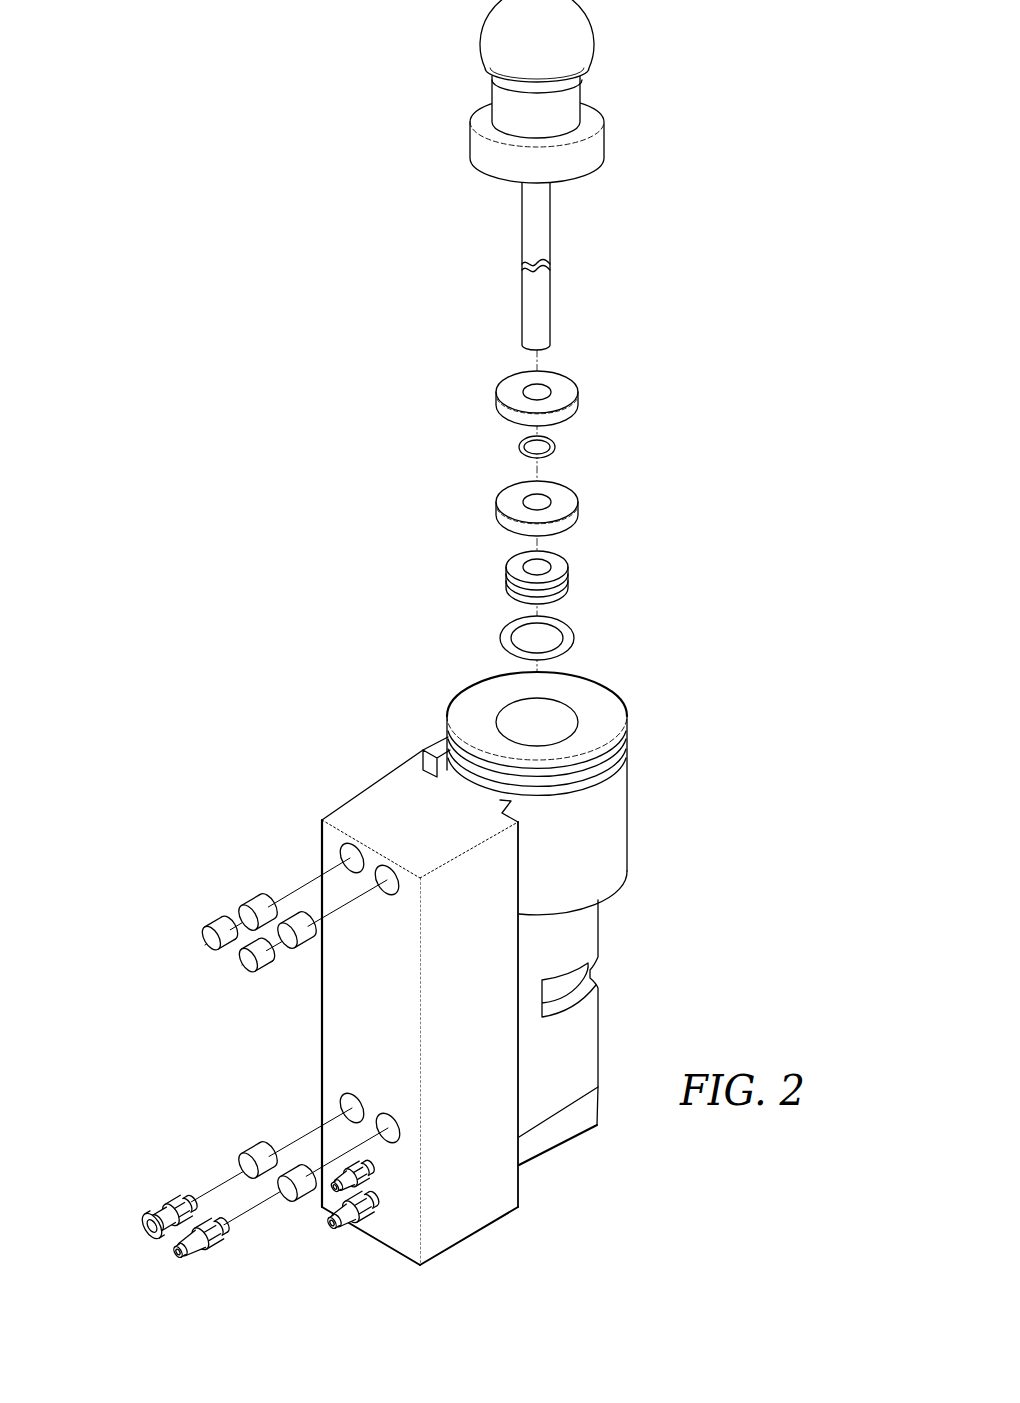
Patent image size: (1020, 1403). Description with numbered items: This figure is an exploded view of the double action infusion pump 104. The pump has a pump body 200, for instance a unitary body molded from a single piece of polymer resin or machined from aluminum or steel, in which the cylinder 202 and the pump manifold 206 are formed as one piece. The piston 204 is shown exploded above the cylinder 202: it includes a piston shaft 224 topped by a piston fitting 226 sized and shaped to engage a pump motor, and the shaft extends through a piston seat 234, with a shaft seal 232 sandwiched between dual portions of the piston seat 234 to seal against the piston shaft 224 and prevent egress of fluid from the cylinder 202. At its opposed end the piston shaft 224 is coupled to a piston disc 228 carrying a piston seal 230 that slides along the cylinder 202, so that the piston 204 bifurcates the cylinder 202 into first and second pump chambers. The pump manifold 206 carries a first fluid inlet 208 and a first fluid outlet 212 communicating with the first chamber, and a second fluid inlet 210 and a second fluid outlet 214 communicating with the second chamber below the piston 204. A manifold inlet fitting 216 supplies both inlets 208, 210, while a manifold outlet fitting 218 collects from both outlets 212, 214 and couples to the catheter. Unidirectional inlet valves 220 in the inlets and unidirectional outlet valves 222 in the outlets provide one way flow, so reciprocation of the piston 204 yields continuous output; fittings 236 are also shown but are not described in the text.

The double action infusion pump 104 is at (370, 807).
The pump body 200 is at (612, 810).
The cylinder 202 is at (515, 720).
The piston 204 is at (487, 378).
The pump manifold 206 is at (495, 1175).
The first fluid inlet 208 is at (385, 886).
The second fluid inlet 210 is at (386, 1132).
The first fluid outlet 212 is at (342, 852).
The second fluid outlet 214 is at (320, 1102).
The manifold inlet fitting 216 is at (180, 1252).
The manifold outlet fitting 218 is at (152, 1207).
The unidirectional inlet valve 220 is at (303, 946).
The unidirectional outlet valve 222 is at (265, 893).
The piston shaft 224 is at (537, 229).
The piston fitting 226 is at (592, 104).
The piston disc 228 is at (563, 561).
The piston seal 230 is at (568, 636).
The shaft seal 232 is at (556, 447).
The piston seat 234 is at (562, 384).
The plug 236 is at (213, 943).